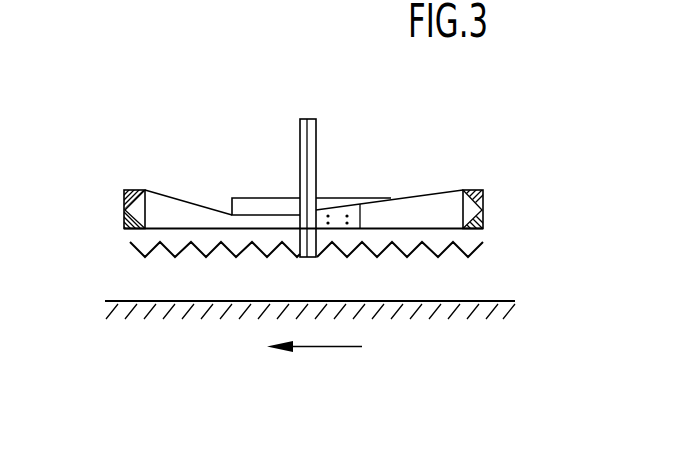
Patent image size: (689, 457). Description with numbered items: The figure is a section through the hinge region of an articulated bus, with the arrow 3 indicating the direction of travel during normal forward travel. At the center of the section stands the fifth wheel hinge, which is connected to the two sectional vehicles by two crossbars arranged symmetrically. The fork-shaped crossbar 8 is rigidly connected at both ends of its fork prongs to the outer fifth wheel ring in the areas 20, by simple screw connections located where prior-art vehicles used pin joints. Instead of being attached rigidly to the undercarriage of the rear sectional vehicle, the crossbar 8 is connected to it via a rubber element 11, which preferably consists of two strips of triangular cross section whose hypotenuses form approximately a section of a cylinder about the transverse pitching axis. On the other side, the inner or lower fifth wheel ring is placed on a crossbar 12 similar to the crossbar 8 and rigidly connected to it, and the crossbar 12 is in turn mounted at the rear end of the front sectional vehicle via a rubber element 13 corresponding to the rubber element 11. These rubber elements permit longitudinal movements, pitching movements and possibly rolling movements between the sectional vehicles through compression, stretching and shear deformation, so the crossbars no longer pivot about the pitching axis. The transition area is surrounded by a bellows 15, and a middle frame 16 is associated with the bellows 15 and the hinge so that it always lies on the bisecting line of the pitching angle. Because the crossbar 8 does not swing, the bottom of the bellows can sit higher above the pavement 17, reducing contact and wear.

The arrow 3 is at (318, 347).
The crossbar 8 is at (423, 213).
The rubber element 11 is at (483, 224).
The crossbar 12 is at (164, 205).
The rubber element 13 is at (124, 218).
The bellows 15 is at (447, 252).
The middle frame 16 is at (301, 258).
The pavement 17 is at (503, 313).
The areas 20 is at (337, 210).